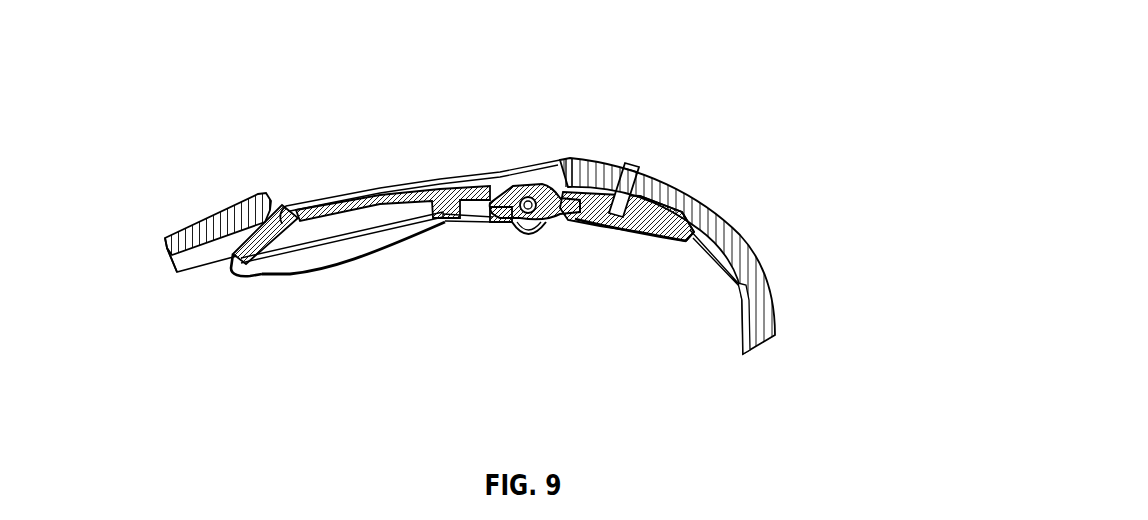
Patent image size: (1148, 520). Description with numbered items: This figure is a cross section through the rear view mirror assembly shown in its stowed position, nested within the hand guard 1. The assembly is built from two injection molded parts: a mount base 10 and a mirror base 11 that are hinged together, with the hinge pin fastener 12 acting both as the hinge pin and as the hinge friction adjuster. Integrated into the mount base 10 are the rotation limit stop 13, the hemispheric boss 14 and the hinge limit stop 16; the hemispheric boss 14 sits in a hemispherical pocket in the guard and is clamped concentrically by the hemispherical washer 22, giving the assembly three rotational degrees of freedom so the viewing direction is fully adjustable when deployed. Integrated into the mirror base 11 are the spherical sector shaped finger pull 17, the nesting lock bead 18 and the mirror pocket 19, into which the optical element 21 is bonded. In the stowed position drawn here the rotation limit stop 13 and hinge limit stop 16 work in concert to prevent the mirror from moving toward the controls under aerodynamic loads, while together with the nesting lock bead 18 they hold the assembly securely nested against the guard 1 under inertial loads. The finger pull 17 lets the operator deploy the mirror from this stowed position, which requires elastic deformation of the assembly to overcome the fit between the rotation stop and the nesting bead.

The strap 1 is at (774, 259).
The mount base 10 is at (569, 214).
The mirror base 11 is at (409, 196).
The hinge pin fastener 12 is at (523, 194).
The rotation limit stop 13 is at (681, 219).
The hemispheric boss 14 is at (606, 192).
The hinge limit stop 16 is at (495, 228).
The spherical sector shaped finger pull 17 is at (233, 247).
The nesting lock bead 18 is at (289, 204).
The mirror pocket 19 is at (423, 215).
The optical element 21 is at (352, 248).
The hemispherical washer 22 is at (630, 240).